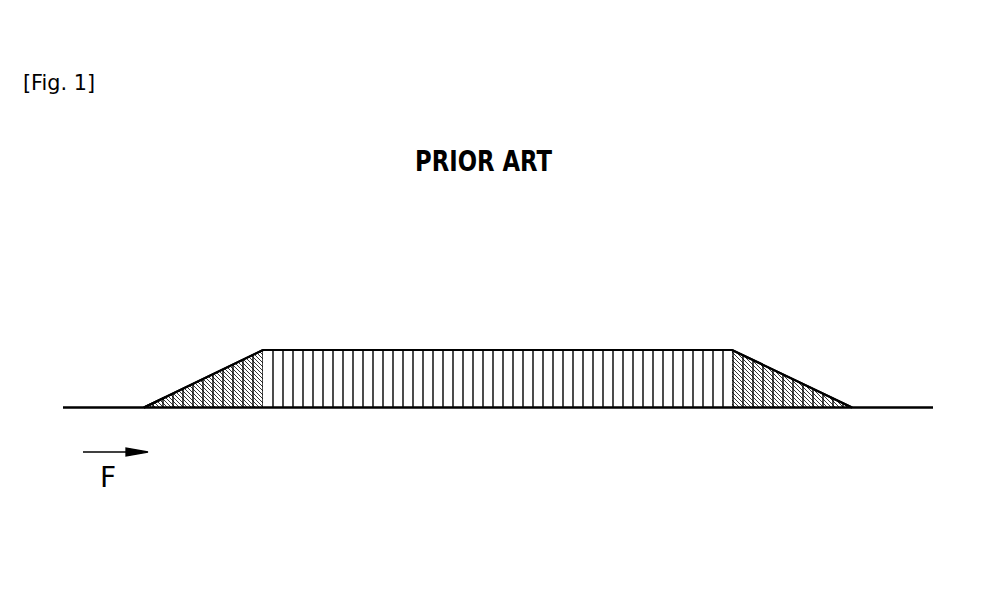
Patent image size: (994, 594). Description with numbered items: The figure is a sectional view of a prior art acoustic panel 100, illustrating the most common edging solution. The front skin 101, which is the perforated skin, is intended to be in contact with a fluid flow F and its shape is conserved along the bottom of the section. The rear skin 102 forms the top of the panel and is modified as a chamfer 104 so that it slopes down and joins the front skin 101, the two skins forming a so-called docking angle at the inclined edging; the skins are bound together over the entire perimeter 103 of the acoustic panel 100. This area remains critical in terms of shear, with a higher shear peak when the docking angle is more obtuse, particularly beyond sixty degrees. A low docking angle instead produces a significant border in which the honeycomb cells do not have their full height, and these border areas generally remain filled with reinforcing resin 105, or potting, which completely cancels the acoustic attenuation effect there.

The acoustic panel 100 is at (358, 296).
The front skin 101 is at (510, 409).
The rear skin 102 is at (642, 349).
The perimeter 103 is at (138, 380).
The chamfer 104 is at (783, 373).
The reinforcing resin 105 is at (215, 373).